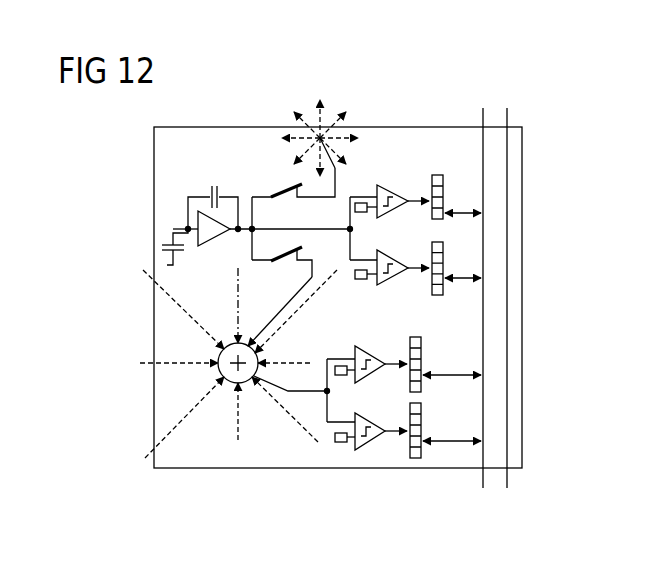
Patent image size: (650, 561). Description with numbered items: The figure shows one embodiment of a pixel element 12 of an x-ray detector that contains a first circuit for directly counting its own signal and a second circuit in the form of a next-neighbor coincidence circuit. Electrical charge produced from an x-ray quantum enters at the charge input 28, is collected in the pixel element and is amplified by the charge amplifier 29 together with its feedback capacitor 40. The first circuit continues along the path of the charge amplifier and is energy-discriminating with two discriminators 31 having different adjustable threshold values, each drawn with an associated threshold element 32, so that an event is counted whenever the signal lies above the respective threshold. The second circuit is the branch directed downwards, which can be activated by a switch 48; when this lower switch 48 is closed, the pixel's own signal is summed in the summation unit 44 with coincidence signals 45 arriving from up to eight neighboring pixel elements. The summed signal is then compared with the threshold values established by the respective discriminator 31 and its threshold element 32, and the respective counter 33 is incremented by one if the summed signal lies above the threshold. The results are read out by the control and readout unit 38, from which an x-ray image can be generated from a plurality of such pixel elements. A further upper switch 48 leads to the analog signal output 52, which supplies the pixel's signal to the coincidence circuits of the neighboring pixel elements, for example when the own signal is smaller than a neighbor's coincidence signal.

The pixel element 12 is at (154, 149).
The charge input 28 is at (167, 265).
The charge amplifier 29 is at (212, 248).
The discriminator 31 is at (397, 250).
The threshold reference unit 32 is at (363, 203).
The counter 33 is at (443, 190).
The control and readout unit 38 is at (507, 152).
The feedback capacitor 40 is at (210, 191).
The summation unit 44 is at (222, 350).
The coincidence signals 45 is at (176, 422).
The switch 48 is at (288, 250).
The analog signal output 52 is at (320, 138).